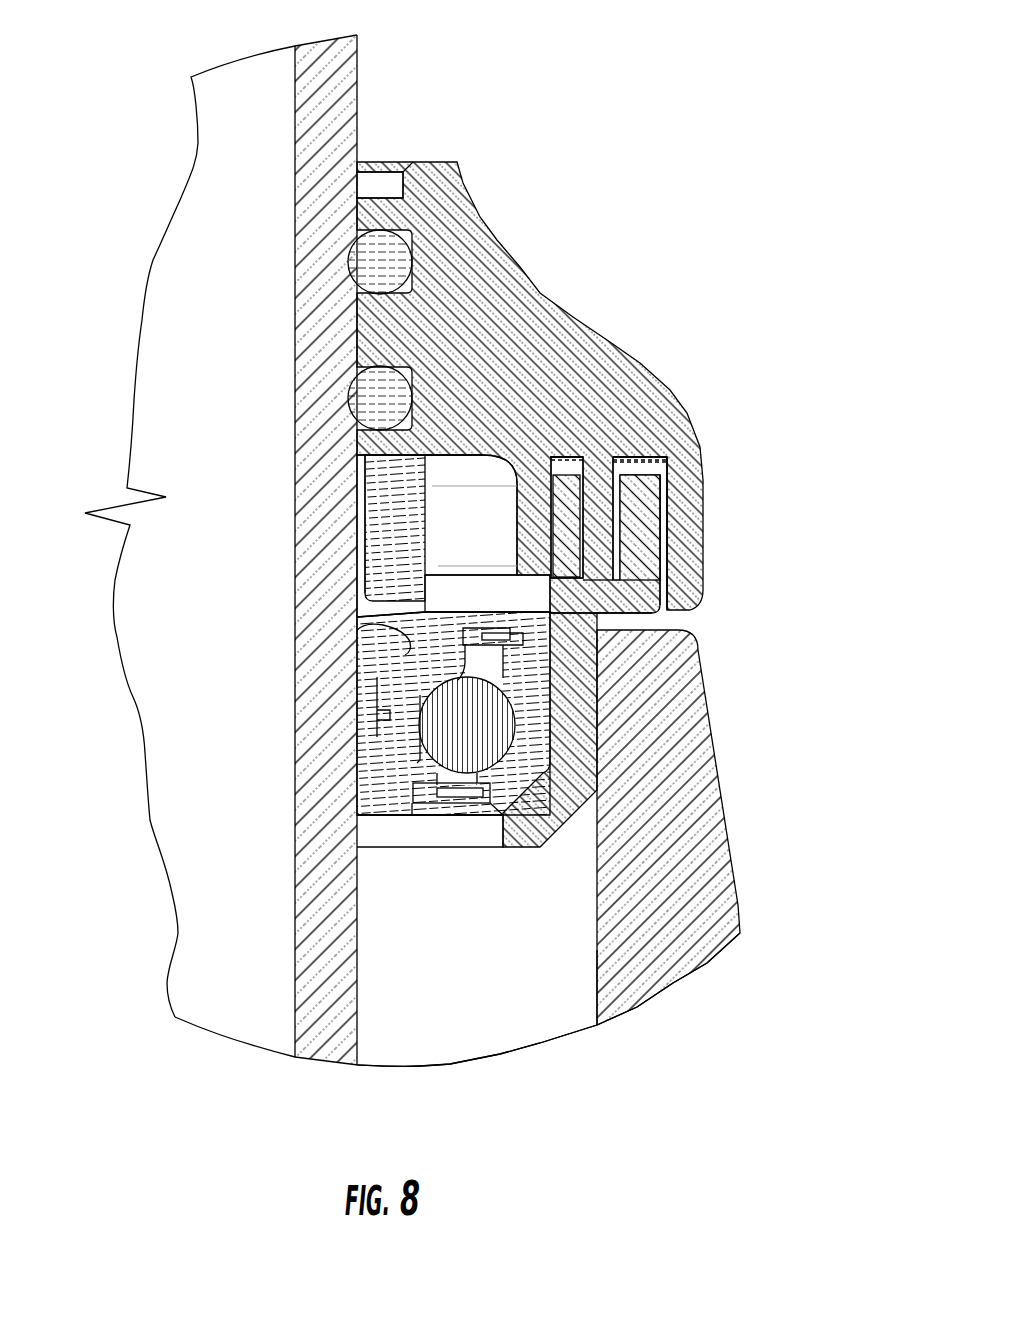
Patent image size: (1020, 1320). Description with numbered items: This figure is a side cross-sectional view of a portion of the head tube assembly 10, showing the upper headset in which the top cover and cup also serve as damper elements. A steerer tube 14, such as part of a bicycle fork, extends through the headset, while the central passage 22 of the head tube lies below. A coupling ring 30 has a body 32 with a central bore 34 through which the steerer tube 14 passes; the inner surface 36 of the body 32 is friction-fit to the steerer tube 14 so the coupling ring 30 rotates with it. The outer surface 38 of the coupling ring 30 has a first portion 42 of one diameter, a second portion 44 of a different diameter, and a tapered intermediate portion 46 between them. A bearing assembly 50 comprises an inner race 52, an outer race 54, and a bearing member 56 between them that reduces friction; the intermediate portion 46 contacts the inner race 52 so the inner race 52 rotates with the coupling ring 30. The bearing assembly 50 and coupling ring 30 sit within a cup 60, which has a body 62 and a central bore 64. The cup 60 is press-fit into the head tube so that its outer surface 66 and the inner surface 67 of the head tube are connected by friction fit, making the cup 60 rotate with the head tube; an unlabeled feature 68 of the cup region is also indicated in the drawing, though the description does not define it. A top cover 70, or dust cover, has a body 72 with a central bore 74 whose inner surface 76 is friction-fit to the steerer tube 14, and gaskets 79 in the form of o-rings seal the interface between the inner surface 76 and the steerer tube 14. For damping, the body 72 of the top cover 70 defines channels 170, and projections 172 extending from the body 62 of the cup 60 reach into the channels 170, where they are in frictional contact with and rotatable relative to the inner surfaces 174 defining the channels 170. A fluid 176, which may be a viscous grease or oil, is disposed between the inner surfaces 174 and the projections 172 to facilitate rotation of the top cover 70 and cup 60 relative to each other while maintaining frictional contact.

The head tube assembly 10 is at (725, 215).
The steerer tube 14 is at (410, 80).
The central passage 22 is at (501, 1025).
The coupling ring 30 is at (390, 524).
The body 32 is at (393, 497).
The central bore 34 is at (347, 581).
The inner surface 36 is at (365, 483).
The outer surface 38 is at (393, 697).
The first portion 42 is at (438, 566).
The second portion 44 is at (377, 737).
The intermediate portion 46 is at (423, 610).
The bearing assembly 50 is at (441, 831).
The inner race 52 is at (383, 793).
The outer race 54 is at (503, 777).
The bearing member 56 is at (426, 872).
The cup 60 is at (600, 737).
The body 62 is at (580, 773).
The central bore 64 is at (550, 608).
The outer surface 66 is at (660, 572).
The inner surface 67 is at (597, 965).
The recess 68 is at (545, 594).
The top cover 70 is at (575, 312).
The body 72 is at (473, 240).
The central bore 74 is at (395, 160).
The inner surface 76 is at (357, 350).
The gaskets 79 is at (375, 262).
The channels 170 is at (567, 453).
The projections 172 is at (565, 520).
The inner surfaces 174 is at (548, 460).
The fluid 176 is at (655, 468).